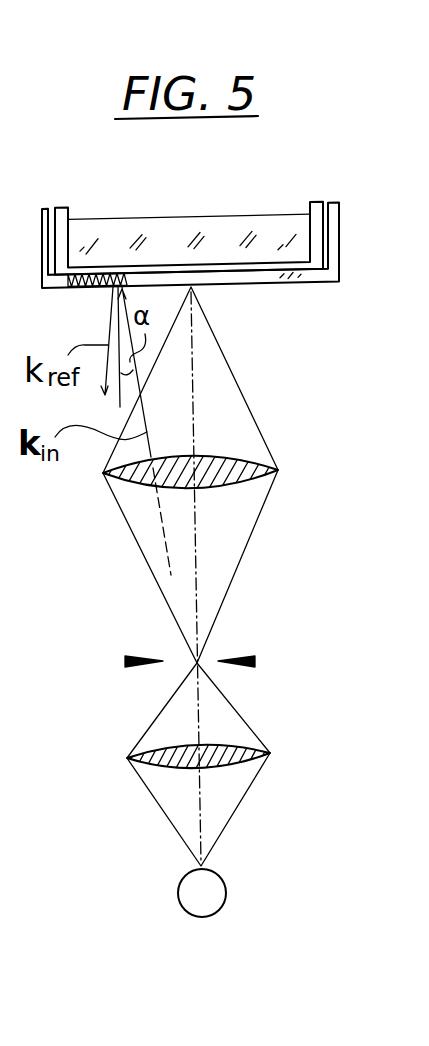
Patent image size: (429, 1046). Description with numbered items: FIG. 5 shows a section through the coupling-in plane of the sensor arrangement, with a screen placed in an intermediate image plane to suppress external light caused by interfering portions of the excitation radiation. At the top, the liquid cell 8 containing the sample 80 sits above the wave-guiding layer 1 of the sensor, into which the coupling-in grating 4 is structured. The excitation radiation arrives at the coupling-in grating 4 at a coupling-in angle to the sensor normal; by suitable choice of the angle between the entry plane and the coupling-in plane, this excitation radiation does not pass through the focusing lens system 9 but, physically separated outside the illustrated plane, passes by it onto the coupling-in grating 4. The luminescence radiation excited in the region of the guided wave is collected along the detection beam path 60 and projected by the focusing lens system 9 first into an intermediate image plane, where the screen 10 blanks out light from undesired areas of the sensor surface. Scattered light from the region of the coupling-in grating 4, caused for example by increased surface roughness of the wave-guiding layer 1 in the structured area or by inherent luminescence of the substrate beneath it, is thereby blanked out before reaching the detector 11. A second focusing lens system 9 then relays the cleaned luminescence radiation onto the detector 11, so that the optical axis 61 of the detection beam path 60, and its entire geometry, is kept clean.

The wave-guiding layer 1 is at (313, 276).
The coupling-in grating 4 is at (102, 276).
The liquid cell 8 is at (292, 250).
The sample 80 is at (325, 262).
The focusing lens system 9 is at (263, 485).
The screen 10 is at (255, 661).
The detector 11 is at (217, 892).
The detection beam path 60 is at (220, 368).
The optical axis 61 is at (193, 412).